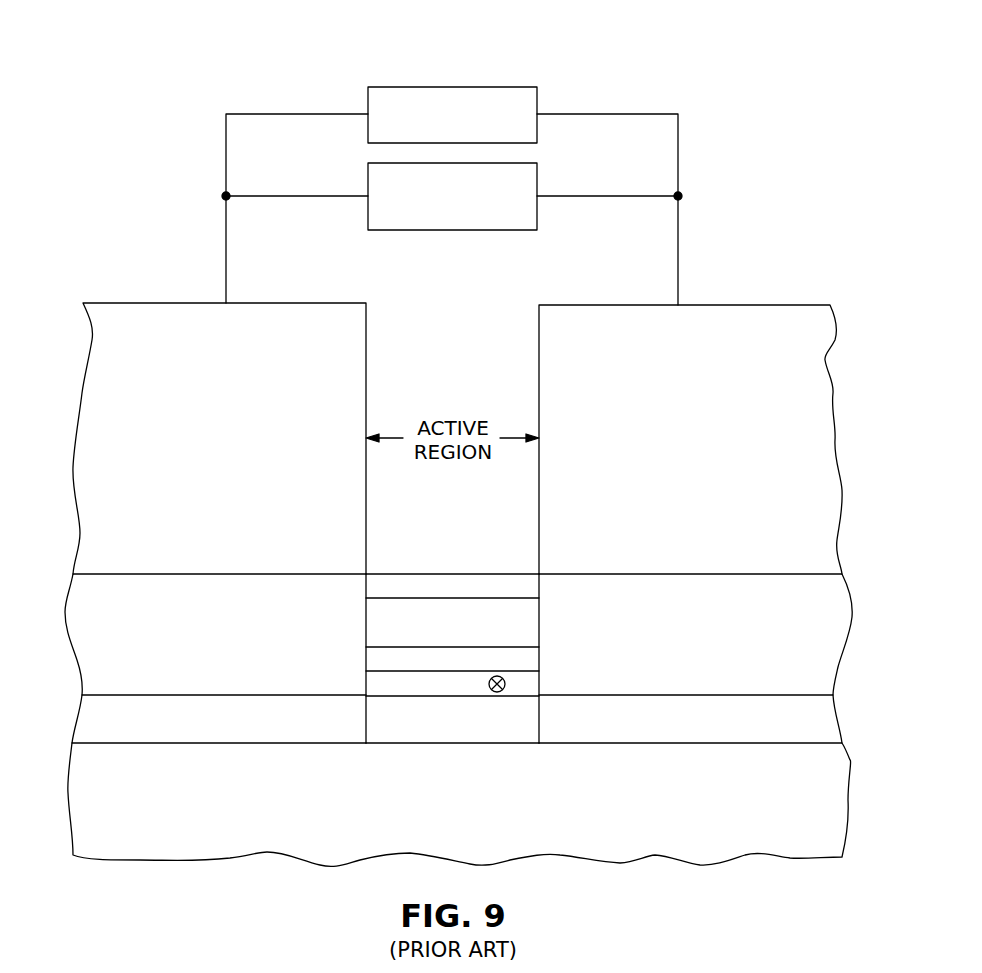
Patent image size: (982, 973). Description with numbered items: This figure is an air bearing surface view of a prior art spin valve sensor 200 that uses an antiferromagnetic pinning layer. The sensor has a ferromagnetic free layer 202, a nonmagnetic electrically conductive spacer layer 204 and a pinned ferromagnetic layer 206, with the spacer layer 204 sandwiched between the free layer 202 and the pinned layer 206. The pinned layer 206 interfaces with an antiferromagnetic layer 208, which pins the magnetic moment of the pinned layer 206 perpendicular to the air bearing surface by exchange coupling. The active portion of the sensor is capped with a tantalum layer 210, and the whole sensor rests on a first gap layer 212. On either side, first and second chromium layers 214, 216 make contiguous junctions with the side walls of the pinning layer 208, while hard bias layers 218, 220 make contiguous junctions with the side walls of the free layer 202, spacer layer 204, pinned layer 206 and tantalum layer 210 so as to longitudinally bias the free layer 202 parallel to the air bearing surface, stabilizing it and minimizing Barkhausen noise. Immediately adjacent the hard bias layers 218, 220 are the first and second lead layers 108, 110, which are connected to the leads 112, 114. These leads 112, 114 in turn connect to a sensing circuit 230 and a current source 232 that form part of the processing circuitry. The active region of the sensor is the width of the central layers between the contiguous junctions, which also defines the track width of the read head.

The first lead layer 108 is at (132, 310).
The second lead layer 110 is at (766, 315).
The first lead 112 is at (226, 229).
The second lead 114 is at (678, 237).
The prior art spin valve sensor 200 is at (782, 224).
The ferromagnetic free layer 202 is at (539, 620).
The nonmagnetic electrically conductive spacer layer 204 is at (539, 655).
The pinned ferromagnetic layer 206 is at (539, 679).
The antiferromagnetic layer 208 is at (539, 717).
The tantalum layer 210 is at (539, 585).
The first gap layer 212 is at (707, 855).
The first chromium layer 214 is at (297, 730).
The second chromium layer 216 is at (761, 730).
The first hard bias layer 218 is at (278, 588).
The second hard bias layer 220 is at (773, 585).
The sensing circuit 230 is at (415, 86).
The current source 232 is at (478, 231).